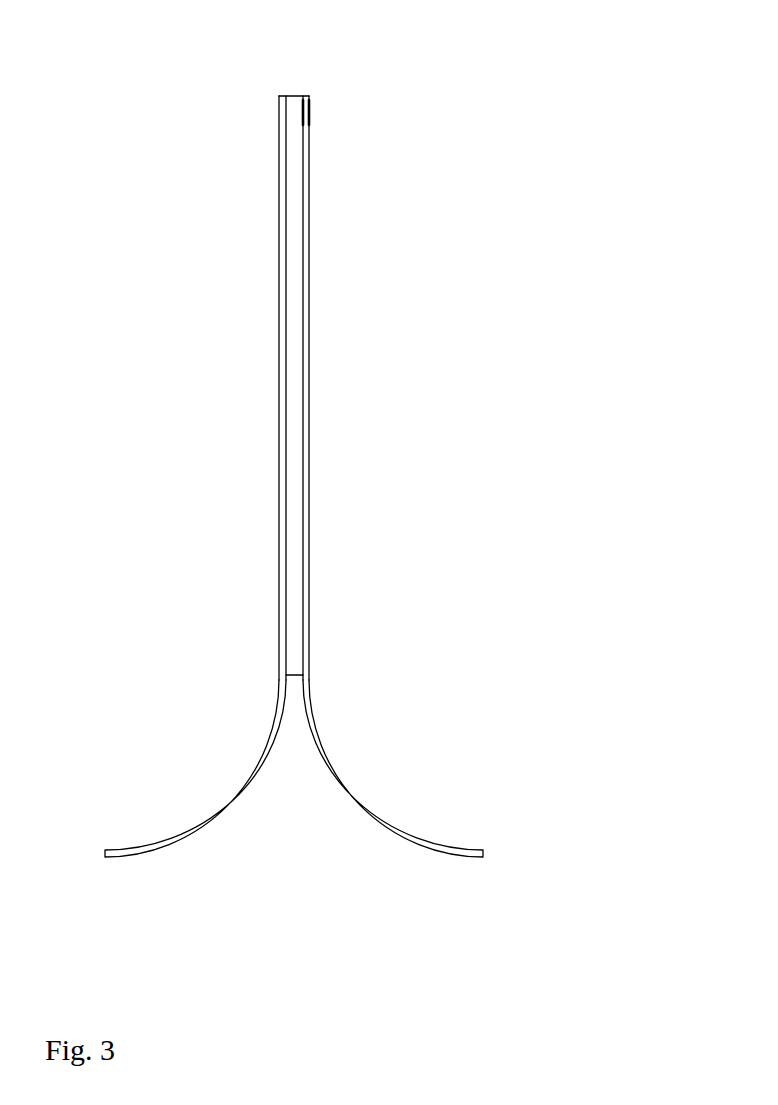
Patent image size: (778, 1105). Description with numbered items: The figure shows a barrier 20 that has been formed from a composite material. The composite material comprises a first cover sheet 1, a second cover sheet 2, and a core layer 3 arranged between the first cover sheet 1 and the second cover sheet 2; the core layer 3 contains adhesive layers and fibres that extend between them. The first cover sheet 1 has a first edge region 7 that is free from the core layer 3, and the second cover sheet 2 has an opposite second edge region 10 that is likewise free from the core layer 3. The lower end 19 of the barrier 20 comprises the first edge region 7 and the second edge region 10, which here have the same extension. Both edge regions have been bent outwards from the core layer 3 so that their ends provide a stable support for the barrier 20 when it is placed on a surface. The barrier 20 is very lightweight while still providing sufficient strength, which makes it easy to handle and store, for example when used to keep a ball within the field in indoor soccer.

The first cover sheet 1 is at (307, 207).
The second cover sheet 2 is at (282, 223).
The core layer 3 is at (293, 105).
The first edge region 7 is at (420, 842).
The second edge region 10 is at (140, 846).
The lower end 19 is at (566, 852).
The barrier 20 is at (463, 276).